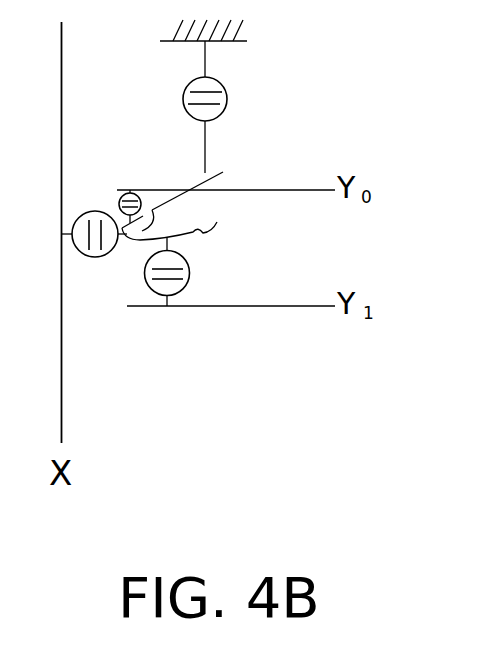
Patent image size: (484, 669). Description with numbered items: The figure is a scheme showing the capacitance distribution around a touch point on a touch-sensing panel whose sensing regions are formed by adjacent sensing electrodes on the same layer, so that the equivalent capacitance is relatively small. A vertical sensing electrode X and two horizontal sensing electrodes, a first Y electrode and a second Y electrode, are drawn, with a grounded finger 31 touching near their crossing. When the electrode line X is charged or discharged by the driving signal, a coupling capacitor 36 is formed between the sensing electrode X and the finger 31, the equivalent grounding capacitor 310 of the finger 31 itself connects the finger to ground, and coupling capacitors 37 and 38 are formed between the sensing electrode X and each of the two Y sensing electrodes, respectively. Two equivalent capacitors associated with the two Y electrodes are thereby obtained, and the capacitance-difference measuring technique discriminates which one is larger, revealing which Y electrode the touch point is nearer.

The equivalent grounding capacitor 310 is at (227, 100).
The coupling capacitor 37 is at (119, 197).
The finger 31 is at (217, 222).
The coupling capacitor 36 is at (84, 258).
The coupling capacitor 38 is at (190, 272).